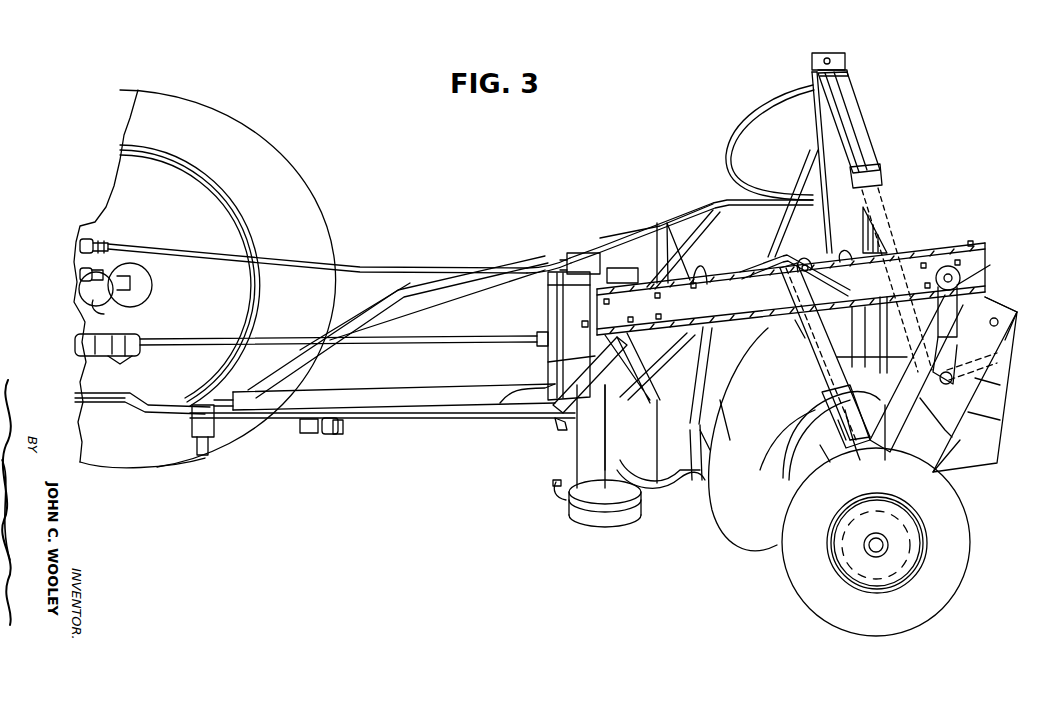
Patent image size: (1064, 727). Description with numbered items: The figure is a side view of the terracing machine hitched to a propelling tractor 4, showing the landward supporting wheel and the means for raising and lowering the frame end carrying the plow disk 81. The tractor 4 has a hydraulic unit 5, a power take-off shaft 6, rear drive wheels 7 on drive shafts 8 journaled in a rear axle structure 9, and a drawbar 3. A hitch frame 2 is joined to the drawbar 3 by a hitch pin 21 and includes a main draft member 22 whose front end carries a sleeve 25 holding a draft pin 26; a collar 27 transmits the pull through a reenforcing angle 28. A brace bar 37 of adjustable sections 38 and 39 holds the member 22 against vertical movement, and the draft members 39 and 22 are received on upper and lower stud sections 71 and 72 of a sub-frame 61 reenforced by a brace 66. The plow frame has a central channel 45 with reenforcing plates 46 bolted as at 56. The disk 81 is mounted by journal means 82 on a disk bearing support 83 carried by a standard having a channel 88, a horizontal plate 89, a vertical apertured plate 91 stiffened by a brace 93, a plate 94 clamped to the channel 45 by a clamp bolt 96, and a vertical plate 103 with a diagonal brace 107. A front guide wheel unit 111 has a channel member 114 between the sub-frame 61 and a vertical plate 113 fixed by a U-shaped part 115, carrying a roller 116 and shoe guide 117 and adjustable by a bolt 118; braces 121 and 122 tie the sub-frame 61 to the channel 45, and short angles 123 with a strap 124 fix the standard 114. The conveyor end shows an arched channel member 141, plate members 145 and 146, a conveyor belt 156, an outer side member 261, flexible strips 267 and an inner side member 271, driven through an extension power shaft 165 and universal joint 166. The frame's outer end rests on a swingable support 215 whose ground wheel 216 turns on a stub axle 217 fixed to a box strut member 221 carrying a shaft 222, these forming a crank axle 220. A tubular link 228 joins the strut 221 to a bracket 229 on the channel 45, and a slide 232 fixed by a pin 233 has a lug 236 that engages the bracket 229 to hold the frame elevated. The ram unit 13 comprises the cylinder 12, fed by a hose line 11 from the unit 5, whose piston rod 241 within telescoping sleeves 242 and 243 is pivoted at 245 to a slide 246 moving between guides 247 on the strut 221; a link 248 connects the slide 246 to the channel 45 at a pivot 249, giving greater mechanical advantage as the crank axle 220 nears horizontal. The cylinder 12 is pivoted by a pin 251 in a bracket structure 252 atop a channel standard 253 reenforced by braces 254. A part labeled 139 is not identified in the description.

The hitch frame 2 is at (401, 431).
The drawbar 3 is at (128, 405).
The tractor 4 is at (70, 202).
The hydraulic unit 5 is at (50, 249).
The power take-off shaft 6 is at (74, 341).
The rear drive wheels 7 is at (262, 149).
The drive shafts 8 is at (122, 288).
The rear axle structure 9 is at (97, 298).
The hose line 11 is at (370, 262).
The single acting cylinder 12 is at (840, 100).
The ram unit 13 is at (874, 126).
The hitch pin 21 is at (205, 458).
The main draft member 22 is at (452, 405).
The sleeve 25 is at (270, 420).
The draft pin 26 is at (336, 434).
The collar 27 is at (330, 436).
The reenforcing angle 28 is at (310, 430).
The brace bar 37 is at (408, 286).
The brace bar section 38 is at (270, 370).
The brace bar section 39 is at (473, 287).
The central frame section 45 is at (720, 283).
The reenforcing plates 46 is at (676, 327).
The bolts 56 is at (625, 317).
The draft-receiving sub-frame 61 is at (619, 256).
The brace member 66 is at (673, 350).
The upper stud section 71 is at (545, 250).
The lower stud section 72 is at (556, 428).
The disk 81 is at (732, 516).
The journal means 82 is at (804, 428).
The disk bearing support 83 is at (822, 452).
The channel 88 is at (816, 340).
The plate 89 is at (892, 362).
The vertical apertured plate 91 is at (886, 450).
The brace 93 is at (840, 395).
The plate 94 is at (866, 270).
The clamp bolt 96 is at (807, 252).
The vertical plate 103 is at (866, 312).
The brace 107 is at (968, 312).
The front guide wheel unit 111 is at (570, 460).
The vertical plate 113 is at (575, 303).
The channel member 114 is at (605, 452).
The U-shaped part 115 is at (575, 296).
The furrow wall engaging roller 116 is at (582, 520).
The auxiliary shoe guide 117 is at (560, 495).
The bolt 118 is at (580, 324).
The brace 121 is at (560, 364).
The brace 122 is at (697, 400).
The short angles 123 is at (640, 395).
The strap 124 is at (600, 380).
The tube 139 is at (693, 214).
The arched channel member 141 is at (706, 208).
The plate member 145 is at (648, 480).
The plate member 146 is at (980, 414).
The conveyor belt 156 is at (692, 480).
The extension power shaft 165 is at (401, 333).
The universal joint 166 is at (120, 362).
The ground engaging support 215 is at (976, 496).
The ground wheel 216 is at (800, 565).
The stub axle 217 is at (868, 540).
The crank axle 220 is at (992, 432).
The box strut member 221 is at (990, 382).
The shaft 222 is at (990, 318).
The tubular link 228 is at (784, 332).
The bracket 229 is at (747, 287).
The slide 232 is at (846, 440).
The pin 233 is at (790, 462).
The bracket-engaging lug 236 is at (830, 400).
The piston rod 241 is at (912, 228).
The protecting sleeve 242 is at (878, 190).
The protecting sleeve 243 is at (950, 348).
The pivotal connection 245 is at (1000, 358).
The slide 246 is at (1004, 352).
The guides 247 is at (946, 426).
The link 248 is at (962, 280).
The pivot 249 is at (962, 262).
The pin 251 is at (826, 56).
The bracket structure 252 is at (843, 63).
The channel standard 253 is at (826, 133).
The braces 254 is at (800, 181).
The side member 261 is at (683, 270).
The flexible strips 267 is at (700, 400).
The inner side member 271 is at (698, 428).